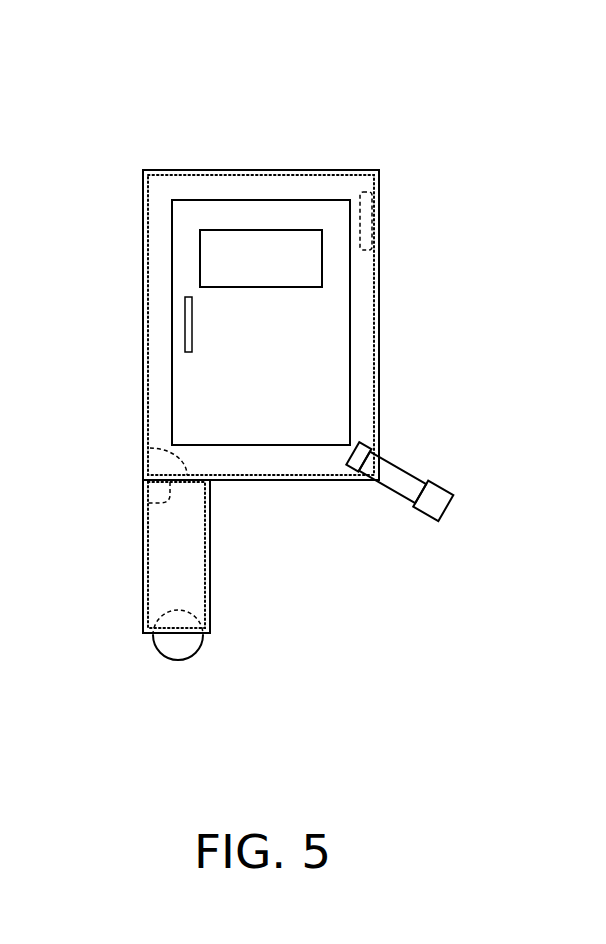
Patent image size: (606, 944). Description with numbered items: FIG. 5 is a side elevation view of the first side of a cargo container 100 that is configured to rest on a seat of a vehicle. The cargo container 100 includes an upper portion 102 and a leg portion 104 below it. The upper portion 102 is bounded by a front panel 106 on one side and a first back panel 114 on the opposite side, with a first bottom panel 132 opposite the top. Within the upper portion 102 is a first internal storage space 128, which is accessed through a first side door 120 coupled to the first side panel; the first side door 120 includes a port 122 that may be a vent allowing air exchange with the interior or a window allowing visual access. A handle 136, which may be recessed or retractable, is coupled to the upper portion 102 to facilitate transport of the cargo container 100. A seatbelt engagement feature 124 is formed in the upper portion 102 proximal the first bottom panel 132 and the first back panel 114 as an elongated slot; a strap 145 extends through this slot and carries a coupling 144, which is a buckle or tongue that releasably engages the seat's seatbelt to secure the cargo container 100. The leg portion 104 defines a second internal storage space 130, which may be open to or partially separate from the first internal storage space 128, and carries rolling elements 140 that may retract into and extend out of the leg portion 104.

The cargo container 100 is at (123, 68).
The upper portion 102 is at (390, 175).
The leg portion 104 is at (212, 482).
The front panel 106 is at (143, 230).
The first back panel 114 is at (381, 171).
The first side door 120 is at (264, 200).
The port 122 is at (258, 288).
The seatbelt engagement feature 124 is at (428, 462).
The first internal storage space 128 is at (150, 450).
The second internal storage space 130 is at (150, 503).
The first bottom panel 132 is at (315, 481).
The handle 136 is at (362, 192).
The rolling elements 140 is at (163, 657).
The coupling 144 is at (425, 518).
The strap 145 is at (388, 492).